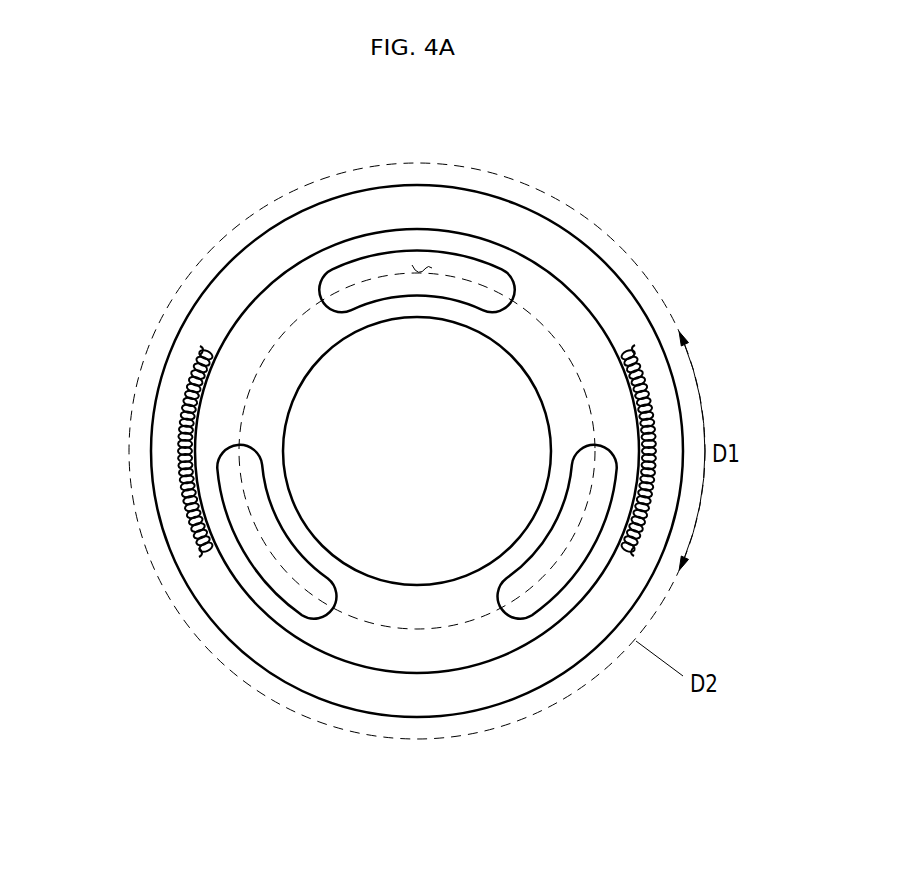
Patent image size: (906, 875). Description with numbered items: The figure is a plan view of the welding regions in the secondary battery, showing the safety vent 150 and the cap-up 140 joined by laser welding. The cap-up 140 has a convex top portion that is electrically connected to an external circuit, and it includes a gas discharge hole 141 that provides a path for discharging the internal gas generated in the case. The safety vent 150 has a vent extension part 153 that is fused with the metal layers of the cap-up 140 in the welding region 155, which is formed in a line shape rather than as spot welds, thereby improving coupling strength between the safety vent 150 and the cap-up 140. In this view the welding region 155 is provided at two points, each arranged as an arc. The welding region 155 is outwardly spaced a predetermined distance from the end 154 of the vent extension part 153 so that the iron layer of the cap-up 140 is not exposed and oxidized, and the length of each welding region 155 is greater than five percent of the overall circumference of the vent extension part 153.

The cap-up 140 is at (515, 405).
The gas discharge hole 141 is at (422, 268).
The safety vent 150 is at (524, 205).
The vent extension part 153 is at (582, 255).
The end of the vent extension part 154 is at (585, 308).
The welding region 155 is at (178, 438).